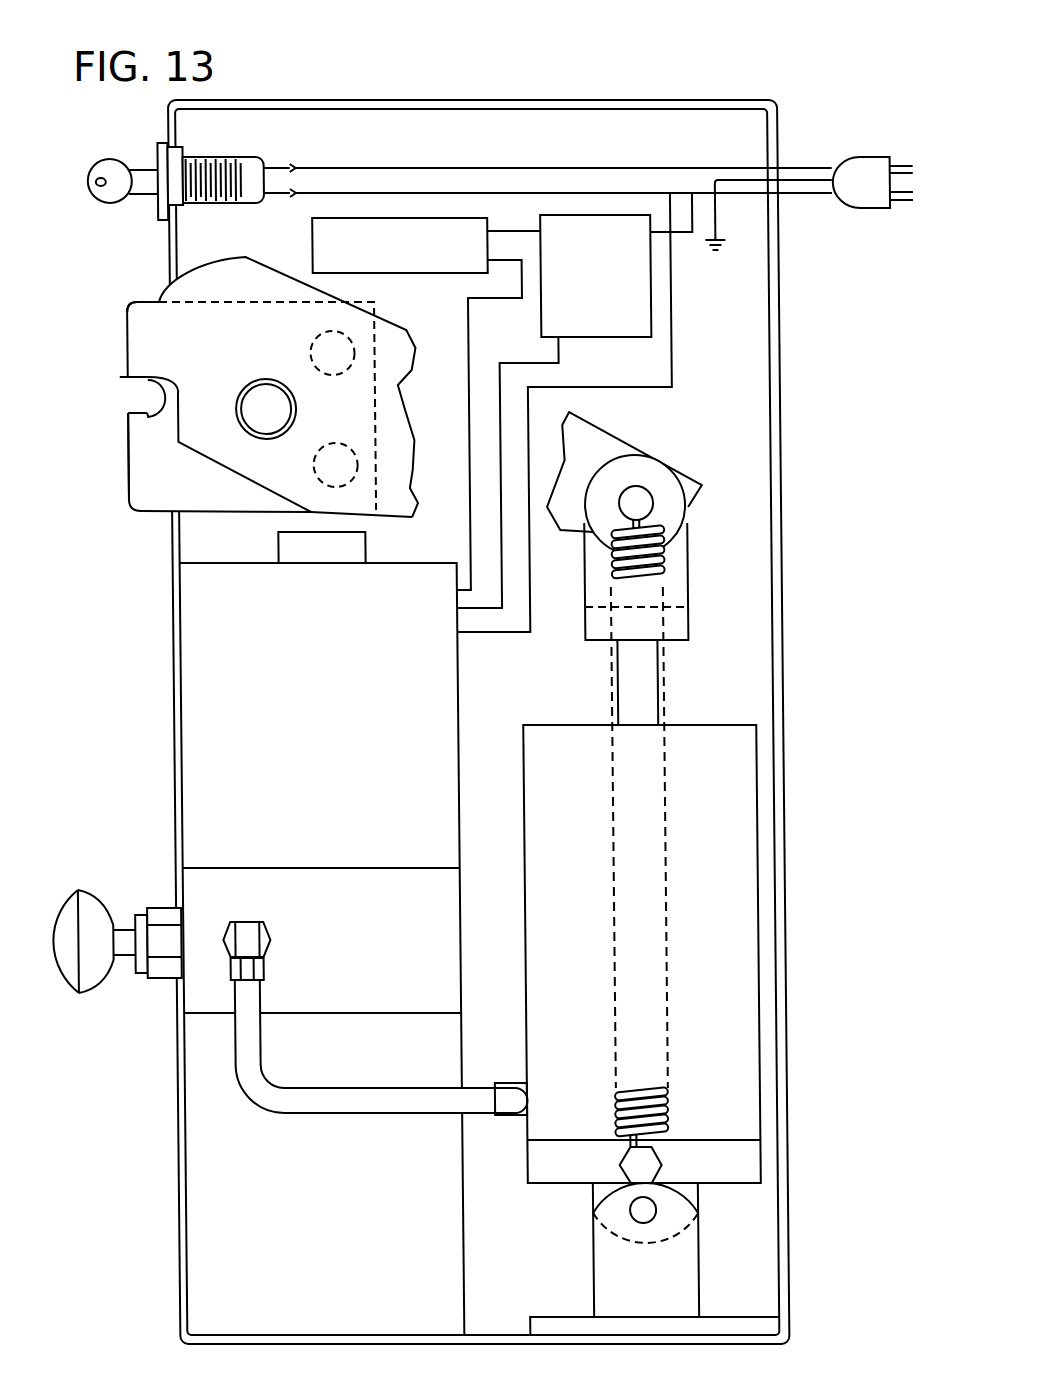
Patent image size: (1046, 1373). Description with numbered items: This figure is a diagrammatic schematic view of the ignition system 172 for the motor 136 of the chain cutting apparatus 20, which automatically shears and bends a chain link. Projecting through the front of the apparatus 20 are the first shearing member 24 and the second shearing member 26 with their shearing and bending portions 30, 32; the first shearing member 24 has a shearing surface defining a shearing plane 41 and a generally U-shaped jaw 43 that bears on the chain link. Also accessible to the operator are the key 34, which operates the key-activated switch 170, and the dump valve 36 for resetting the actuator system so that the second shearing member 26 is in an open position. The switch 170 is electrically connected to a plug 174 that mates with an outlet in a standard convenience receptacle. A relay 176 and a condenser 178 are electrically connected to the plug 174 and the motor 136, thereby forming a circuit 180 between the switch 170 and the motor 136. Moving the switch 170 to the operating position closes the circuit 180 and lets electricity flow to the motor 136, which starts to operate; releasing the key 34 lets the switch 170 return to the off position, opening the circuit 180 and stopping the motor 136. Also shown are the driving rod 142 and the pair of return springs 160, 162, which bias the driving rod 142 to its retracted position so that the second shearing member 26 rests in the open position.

The cutting apparatus 20 is at (317, 88).
The ignition system 172 is at (485, 138).
The key-activated switch 170 is at (158, 147).
The key 34 is at (117, 195).
The condenser 178 is at (310, 226).
The shearing plane 41 is at (143, 312).
The second shearing member 26 is at (167, 335).
The shearing and bending portion 32 is at (152, 362).
The jaw 43 is at (145, 393).
The shearing and bending portion 30 is at (150, 433).
The first shearing member 24 is at (160, 485).
The motor 136 is at (213, 663).
The dump valve 36 is at (58, 967).
The plug 174 is at (863, 177).
The relay 176 is at (648, 320).
The circuit 180 is at (643, 390).
The return spring 162 is at (684, 592).
The return spring 160 is at (654, 573).
The driving rod 142 is at (633, 687).